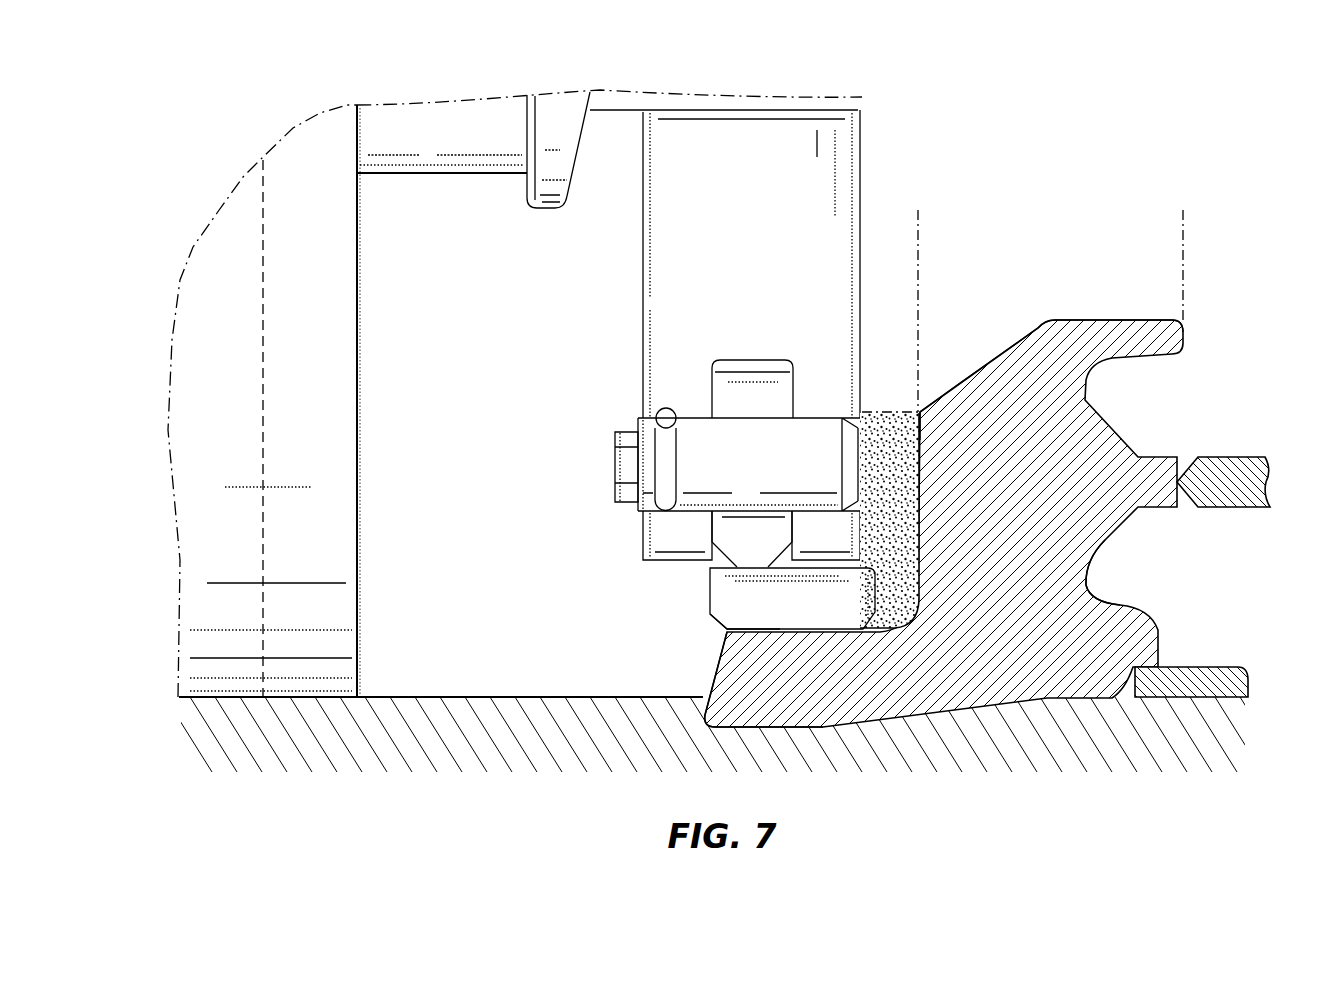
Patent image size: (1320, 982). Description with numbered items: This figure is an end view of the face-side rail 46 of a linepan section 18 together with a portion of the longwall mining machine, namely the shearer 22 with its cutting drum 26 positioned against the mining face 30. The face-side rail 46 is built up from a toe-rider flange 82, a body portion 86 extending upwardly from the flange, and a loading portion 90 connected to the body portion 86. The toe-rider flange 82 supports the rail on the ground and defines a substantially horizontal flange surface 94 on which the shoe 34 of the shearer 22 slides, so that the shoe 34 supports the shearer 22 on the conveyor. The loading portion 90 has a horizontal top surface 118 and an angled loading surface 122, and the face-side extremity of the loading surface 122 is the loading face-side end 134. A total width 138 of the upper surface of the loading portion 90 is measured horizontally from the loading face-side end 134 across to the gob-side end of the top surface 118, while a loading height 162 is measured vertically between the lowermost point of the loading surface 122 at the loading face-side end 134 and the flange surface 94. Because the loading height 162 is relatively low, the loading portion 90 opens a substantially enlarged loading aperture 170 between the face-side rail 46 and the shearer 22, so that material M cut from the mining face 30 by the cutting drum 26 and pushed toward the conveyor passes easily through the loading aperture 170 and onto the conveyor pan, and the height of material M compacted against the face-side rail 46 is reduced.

The cutting drum 26 is at (416, 141).
The mining face 30 is at (218, 378).
The shearer 22 is at (734, 201).
The loading height 162 is at (882, 405).
The total width 138 is at (922, 228).
The loading portion 90 is at (1063, 312).
The loading surface 122 is at (1000, 350).
The top surface 118 is at (1105, 320).
The linepan section 18 is at (1207, 380).
The loading aperture 170 is at (962, 366).
The loading face-side end 134 is at (924, 419).
The material M is at (880, 500).
The face-side rail 46 is at (1003, 543).
The body portion 86 is at (1038, 585).
The flange surface 94 is at (760, 628).
The toe-rider flange 82 is at (705, 683).
The shoe 34 is at (783, 615).